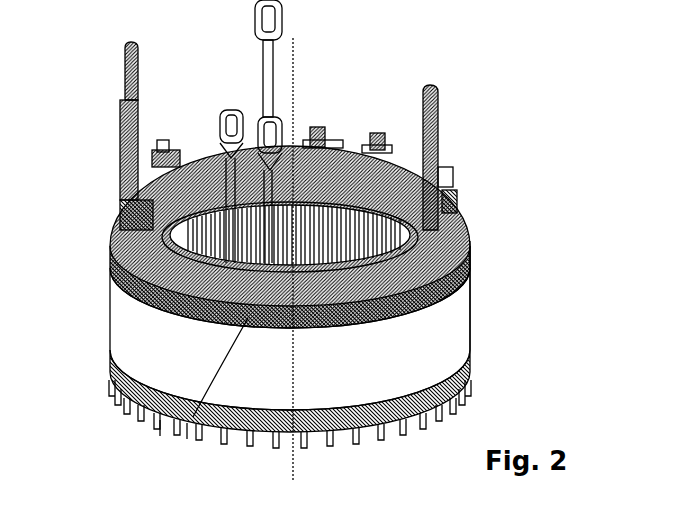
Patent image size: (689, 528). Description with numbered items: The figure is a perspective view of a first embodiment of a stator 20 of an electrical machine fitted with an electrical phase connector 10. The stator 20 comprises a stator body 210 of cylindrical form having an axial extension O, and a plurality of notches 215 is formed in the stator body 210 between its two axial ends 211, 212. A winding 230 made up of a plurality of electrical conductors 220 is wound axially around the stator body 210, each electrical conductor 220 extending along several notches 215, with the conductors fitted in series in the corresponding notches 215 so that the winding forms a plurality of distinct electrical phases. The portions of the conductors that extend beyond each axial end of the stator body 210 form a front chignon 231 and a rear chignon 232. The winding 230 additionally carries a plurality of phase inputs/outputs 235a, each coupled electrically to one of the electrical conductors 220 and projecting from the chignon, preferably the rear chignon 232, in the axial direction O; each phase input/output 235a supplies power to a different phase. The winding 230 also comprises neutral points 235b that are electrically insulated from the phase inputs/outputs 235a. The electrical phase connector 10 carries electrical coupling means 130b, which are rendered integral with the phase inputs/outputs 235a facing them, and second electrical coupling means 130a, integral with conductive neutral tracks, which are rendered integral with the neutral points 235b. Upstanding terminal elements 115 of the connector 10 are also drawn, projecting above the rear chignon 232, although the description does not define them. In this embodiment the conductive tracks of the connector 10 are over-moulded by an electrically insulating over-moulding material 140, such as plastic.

The electrical phase connector 10 is at (458, 148).
The stator 20 is at (85, 282).
The terminal 115 is at (136, 42).
The second electrical coupling means 130a is at (210, 127).
The electrical coupling means 130b is at (160, 143).
The over-moulding material 140 is at (127, 155).
The axial extension O is at (295, 40).
The stator body 210 is at (320, 400).
The axial end 211 is at (113, 247).
The axial end 212 is at (118, 365).
The notches 215 is at (140, 293).
The electrical conductors 220 is at (470, 318).
The winding 230 is at (173, 310).
The front chignon 231 is at (460, 385).
The rear chignon 232 is at (472, 241).
The phase inputs/outputs 235a is at (175, 428).
The neutral points 235b is at (467, 262).